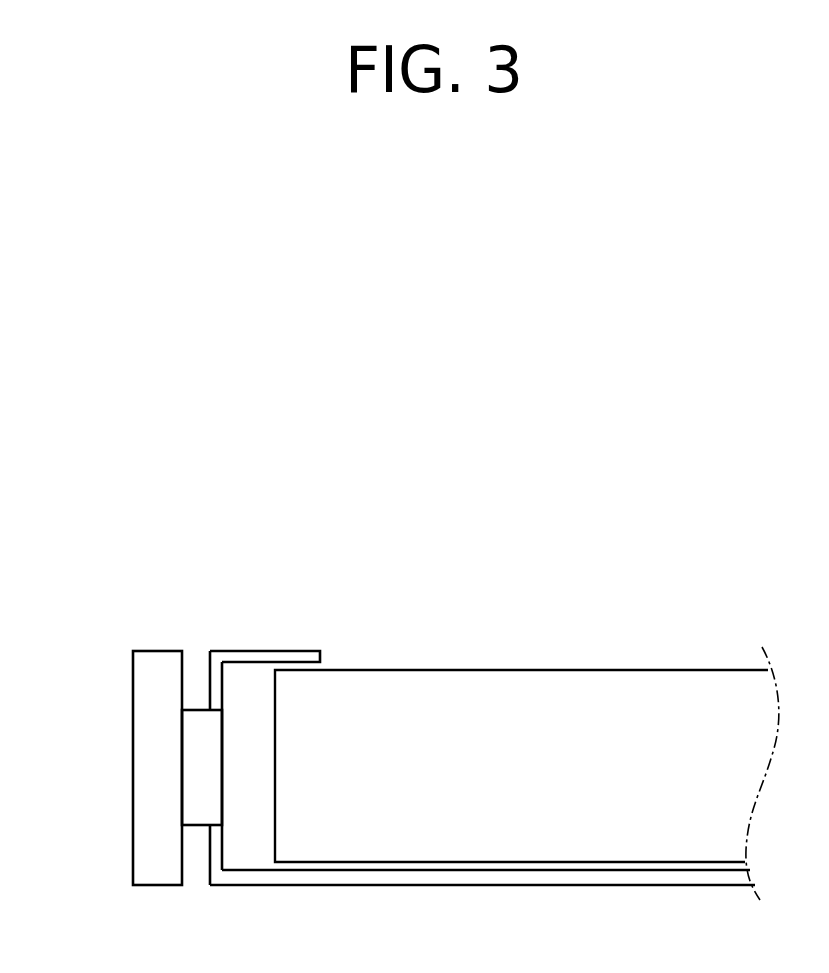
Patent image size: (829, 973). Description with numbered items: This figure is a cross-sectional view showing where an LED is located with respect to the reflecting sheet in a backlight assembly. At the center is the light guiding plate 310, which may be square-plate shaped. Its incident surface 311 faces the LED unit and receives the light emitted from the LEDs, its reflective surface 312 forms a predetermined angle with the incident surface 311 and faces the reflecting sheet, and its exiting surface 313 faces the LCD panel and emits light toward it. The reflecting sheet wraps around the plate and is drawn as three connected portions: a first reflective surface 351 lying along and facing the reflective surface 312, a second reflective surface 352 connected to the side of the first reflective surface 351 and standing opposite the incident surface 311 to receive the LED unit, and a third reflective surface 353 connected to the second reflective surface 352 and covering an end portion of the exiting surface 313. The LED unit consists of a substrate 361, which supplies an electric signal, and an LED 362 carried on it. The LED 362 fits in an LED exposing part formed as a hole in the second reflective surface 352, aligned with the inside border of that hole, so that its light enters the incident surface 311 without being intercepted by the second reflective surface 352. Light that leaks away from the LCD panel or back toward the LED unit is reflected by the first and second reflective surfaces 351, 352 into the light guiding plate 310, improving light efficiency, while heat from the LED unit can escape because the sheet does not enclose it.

The light guiding plate 310 is at (593, 556).
The incident surface 311 is at (275, 748).
The reflective surface 312 is at (595, 862).
The exiting surface 313 is at (515, 673).
The first reflective surface 351 is at (287, 885).
The second reflective surface 352 is at (208, 680).
The third reflective surface 353 is at (283, 651).
The substrate 361 is at (138, 723).
The LED 362 is at (190, 797).